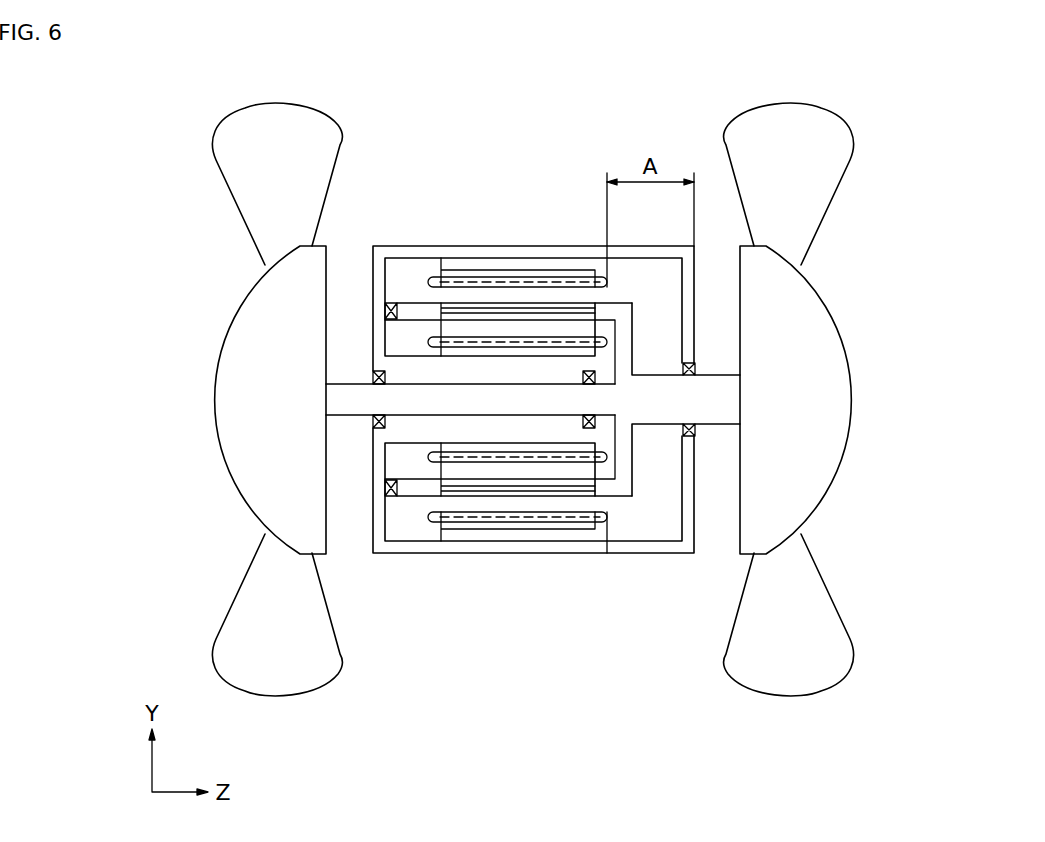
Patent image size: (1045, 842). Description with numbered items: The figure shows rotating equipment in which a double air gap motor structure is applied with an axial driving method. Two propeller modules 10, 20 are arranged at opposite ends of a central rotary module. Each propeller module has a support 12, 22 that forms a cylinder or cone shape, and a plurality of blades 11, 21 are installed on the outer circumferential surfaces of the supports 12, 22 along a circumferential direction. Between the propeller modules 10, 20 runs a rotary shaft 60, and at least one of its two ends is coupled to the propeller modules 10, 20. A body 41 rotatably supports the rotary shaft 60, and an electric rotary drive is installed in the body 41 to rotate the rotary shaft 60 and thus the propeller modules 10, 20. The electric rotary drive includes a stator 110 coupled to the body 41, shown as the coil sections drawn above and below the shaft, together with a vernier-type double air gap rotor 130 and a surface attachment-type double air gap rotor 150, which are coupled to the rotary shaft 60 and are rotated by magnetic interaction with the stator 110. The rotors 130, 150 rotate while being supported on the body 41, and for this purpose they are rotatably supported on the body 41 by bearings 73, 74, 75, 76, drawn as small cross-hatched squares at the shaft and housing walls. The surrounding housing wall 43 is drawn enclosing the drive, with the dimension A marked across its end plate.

The propeller module 10 is at (230, 399).
The blade 11 is at (281, 582).
The support 12 is at (267, 481).
The propeller module 20 is at (836, 399).
The blade 21 is at (785, 584).
The support 22 is at (800, 481).
The body 41 is at (641, 252).
The housing 43 is at (690, 293).
The rotary shaft 60 is at (677, 403).
The bearing 73 is at (392, 303).
The bearing 74 is at (375, 376).
The bearing 75 is at (597, 377).
The bearing 76 is at (697, 366).
The stator 110 is at (492, 455).
The vernier-type double air gap rotor 130 is at (525, 490).
The surface attachment-type double air gap rotor 150 is at (568, 488).